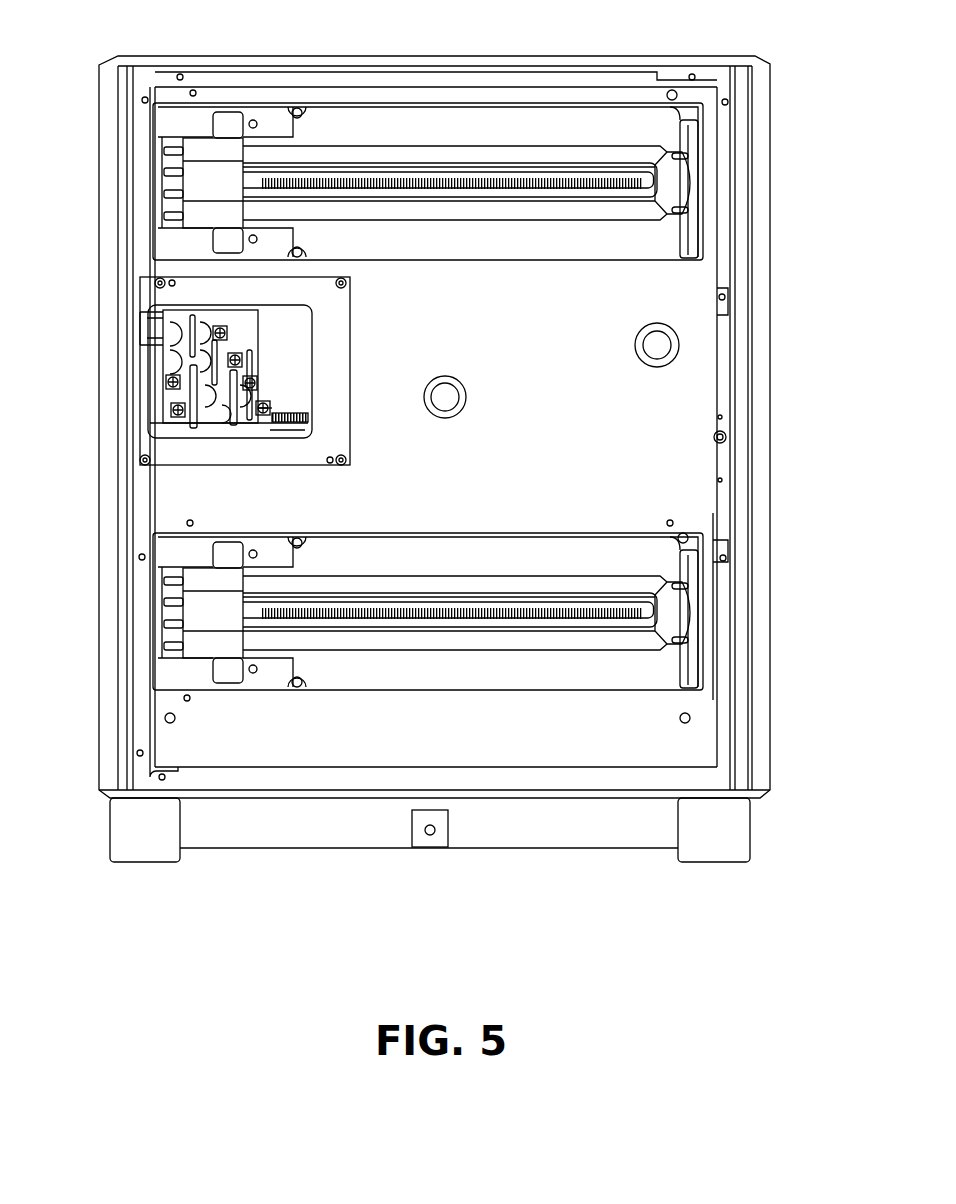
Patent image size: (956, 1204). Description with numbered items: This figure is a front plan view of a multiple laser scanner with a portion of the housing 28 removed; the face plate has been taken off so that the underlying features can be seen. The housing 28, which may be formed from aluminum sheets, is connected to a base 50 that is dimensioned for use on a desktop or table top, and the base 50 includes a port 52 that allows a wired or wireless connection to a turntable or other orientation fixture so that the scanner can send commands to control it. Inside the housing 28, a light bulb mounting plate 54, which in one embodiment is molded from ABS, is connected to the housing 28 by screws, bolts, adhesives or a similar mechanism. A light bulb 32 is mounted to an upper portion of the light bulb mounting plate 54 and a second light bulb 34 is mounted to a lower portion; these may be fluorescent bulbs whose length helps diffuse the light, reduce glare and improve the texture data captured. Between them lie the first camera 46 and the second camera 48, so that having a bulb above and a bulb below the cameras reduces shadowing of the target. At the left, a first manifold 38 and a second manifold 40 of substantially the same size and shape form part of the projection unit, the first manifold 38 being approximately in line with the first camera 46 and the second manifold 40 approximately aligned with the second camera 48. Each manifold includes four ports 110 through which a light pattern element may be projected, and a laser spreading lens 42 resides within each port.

The housing 28 is at (755, 57).
The light bulb 32 is at (648, 183).
The second light bulb 34 is at (648, 613).
The first manifold 38 is at (185, 322).
The second manifold 40 is at (235, 410).
The laser spreading lens 42 is at (250, 330).
The first camera 46 is at (637, 340).
The second camera 48 is at (445, 397).
The base 50 is at (110, 826).
The port 52 is at (430, 840).
The light bulb mounting plate 54 is at (717, 385).
The ports 110 is at (230, 410).